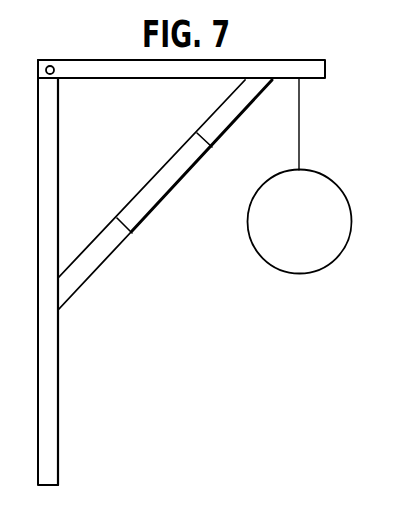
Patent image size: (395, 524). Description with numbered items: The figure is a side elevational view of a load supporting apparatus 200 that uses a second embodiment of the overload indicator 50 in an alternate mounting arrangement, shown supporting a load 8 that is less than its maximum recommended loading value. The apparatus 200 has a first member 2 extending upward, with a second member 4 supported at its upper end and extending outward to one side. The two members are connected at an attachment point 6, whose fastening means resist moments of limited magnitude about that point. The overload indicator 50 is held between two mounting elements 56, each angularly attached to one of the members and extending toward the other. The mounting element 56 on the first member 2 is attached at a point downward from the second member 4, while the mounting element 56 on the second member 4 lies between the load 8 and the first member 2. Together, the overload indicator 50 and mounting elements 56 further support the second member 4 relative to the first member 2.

The first member 2 is at (48, 437).
The second member 4 is at (184, 70).
The attachment point 6 is at (54, 73).
The load 8 is at (298, 258).
The overload indicator 50 is at (162, 199).
The mounting elements 56 is at (220, 120).
The load supporting apparatus 200 is at (195, 272).